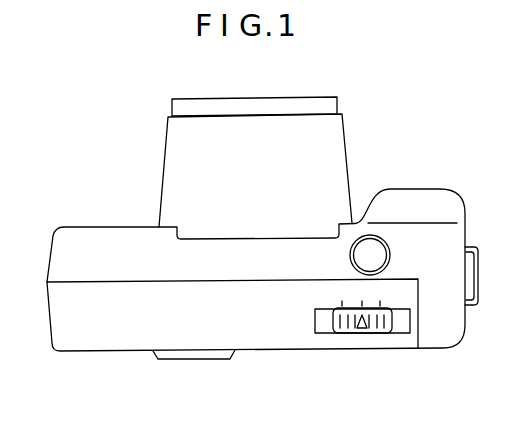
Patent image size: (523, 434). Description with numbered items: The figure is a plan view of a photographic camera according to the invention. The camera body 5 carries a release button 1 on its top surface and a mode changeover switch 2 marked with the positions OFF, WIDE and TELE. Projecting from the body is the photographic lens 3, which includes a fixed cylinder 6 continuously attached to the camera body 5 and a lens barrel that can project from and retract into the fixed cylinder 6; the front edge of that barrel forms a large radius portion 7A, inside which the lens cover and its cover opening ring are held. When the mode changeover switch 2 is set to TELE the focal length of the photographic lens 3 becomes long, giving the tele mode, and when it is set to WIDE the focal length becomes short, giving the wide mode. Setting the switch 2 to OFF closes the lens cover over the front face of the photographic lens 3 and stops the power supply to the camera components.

The release button 1 is at (372, 247).
The mode changeover switch 2 is at (362, 333).
The photographic lens 3 is at (247, 144).
The camera body 5 is at (87, 232).
The fixed cylinder 6 is at (335, 139).
The large radius portion 7A is at (322, 104).